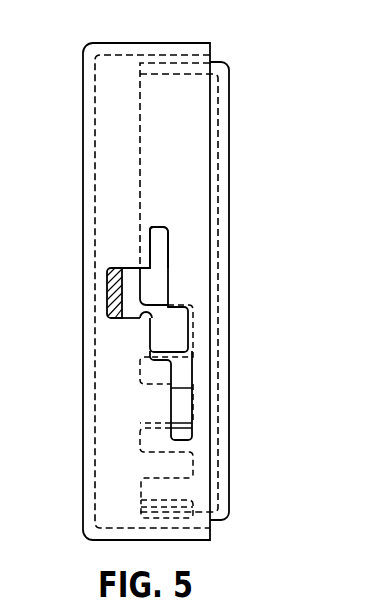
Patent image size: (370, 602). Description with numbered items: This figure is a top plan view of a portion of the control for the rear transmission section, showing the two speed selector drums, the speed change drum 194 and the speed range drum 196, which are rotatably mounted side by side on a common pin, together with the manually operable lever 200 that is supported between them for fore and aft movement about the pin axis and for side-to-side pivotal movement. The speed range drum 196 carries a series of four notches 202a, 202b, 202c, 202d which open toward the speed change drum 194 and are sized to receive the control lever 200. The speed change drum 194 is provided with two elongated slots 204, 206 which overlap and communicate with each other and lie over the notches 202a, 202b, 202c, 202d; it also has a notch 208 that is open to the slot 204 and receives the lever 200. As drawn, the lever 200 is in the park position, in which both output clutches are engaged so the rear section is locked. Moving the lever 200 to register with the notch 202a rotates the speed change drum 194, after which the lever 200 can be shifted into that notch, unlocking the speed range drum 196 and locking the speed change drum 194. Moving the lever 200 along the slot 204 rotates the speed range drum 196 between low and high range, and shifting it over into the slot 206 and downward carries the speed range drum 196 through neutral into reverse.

The speed change drum 194 is at (192, 50).
The speed range drum 196 is at (228, 93).
The manually operable lever 200 is at (119, 272).
The elongated slot 204 is at (164, 229).
The notch 208 is at (163, 325).
The elongated slot 206 is at (189, 413).
The notch 202a is at (190, 350).
The notch 202b is at (176, 389).
The notch 202c is at (163, 473).
The notch 202d is at (141, 506).